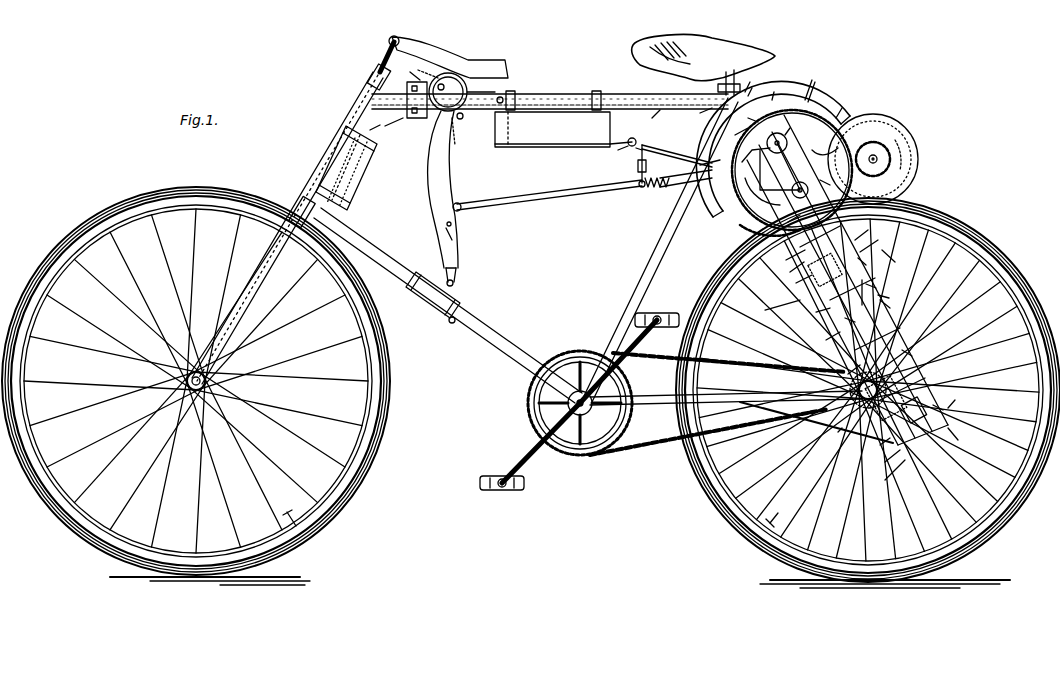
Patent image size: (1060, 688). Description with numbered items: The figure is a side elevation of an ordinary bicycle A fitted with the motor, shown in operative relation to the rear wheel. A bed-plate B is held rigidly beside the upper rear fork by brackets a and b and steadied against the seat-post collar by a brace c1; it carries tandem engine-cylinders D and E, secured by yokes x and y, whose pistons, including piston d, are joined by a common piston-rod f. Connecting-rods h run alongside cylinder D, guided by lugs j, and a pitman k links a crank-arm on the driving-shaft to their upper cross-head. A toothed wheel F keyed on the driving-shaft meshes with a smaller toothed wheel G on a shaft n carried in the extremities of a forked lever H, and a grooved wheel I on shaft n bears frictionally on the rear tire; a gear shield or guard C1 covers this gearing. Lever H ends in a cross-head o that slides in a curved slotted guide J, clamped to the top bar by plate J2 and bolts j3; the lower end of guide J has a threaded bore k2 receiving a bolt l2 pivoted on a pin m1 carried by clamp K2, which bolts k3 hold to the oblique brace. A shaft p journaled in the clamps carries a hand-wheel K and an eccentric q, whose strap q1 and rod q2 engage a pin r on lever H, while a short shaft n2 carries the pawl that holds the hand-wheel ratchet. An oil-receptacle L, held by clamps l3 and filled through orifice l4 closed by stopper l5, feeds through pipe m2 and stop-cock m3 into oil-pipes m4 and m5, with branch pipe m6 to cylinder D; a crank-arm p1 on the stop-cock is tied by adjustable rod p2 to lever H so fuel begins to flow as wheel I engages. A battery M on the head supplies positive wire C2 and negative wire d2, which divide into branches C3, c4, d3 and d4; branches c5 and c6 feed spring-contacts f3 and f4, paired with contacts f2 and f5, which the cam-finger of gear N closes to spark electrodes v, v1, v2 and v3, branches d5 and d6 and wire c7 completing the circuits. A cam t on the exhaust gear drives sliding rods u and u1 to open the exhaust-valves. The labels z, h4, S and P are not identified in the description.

The bicycle A is at (506, 341).
The bed-plate B is at (868, 390).
The main positive wire C2 is at (372, 108).
The hand-wheel K is at (412, 76).
The shaft n is at (423, 66).
The electric battery M is at (350, 180).
The main negative wire d2 is at (392, 126).
The yoke x is at (370, 130).
The longitudinally-concaved clamp plate J2 is at (416, 109).
The eccentric q is at (448, 92).
The short horizontal shaft p is at (443, 80).
The eccentric-strap q1 is at (481, 84).
The stopper l5 is at (497, 89).
The clamps l3 is at (555, 88).
The curved slotted guide J is at (432, 170).
The bolts j3 is at (467, 121).
The rod q2 is at (463, 133).
The oil-receptacle L is at (552, 129).
The orifice l4 is at (508, 129).
The pin r is at (547, 195).
The cross-head o is at (455, 221).
The internally threaded bore k2 is at (455, 237).
The threaded bolt l2 is at (456, 267).
The pin m1 is at (462, 279).
The clamp K2 is at (433, 296).
The bolts k3 is at (452, 325).
The adjustable rod p2 is at (650, 166).
The oil-pipe m4 is at (677, 147).
The stop-cock m3 is at (623, 134).
The short pipe m2 is at (614, 152).
The crank-arm p1 is at (633, 153).
The branch negative wire d3 is at (698, 118).
The branch positive wire C3 is at (752, 82).
The bracket or brace c1 is at (756, 84).
The branch wire c6 is at (812, 153).
The gear shield or guard C1 is at (773, 142).
The spring-contact f4 is at (816, 84).
The toothed wheel F is at (843, 105).
The smaller toothed wheel G is at (873, 159).
The grooved wheel I is at (900, 140).
The gear N is at (792, 170).
The spring-contact f5 is at (825, 146).
The spring-contact f3 is at (736, 136).
The branch wire c5 is at (748, 117).
The branch positive wire c4 is at (793, 123).
The spring-contact f2 is at (751, 158).
The common piston-rod f is at (782, 170).
The cam t is at (762, 191).
The pitman k is at (782, 179).
The longitudinally-sliding rod u is at (832, 187).
The longitudinally-sliding rod u1 is at (787, 223).
The branch negative wire d5 is at (763, 235).
The forked lever H is at (705, 185).
The engine-cylinder D is at (847, 280).
The engine-cylinder E is at (913, 410).
The wire c7 is at (928, 351).
The arm or bracket a is at (817, 315).
The short branch pipe m6 is at (789, 271).
The negative electrode v1 is at (798, 283).
The piston d is at (868, 266).
The spring z is at (875, 290).
The connecting-rod h is at (888, 300).
The branch negative wire d6 is at (827, 397).
The lug j is at (849, 380).
The guide h4 is at (857, 323).
The branch negative wire d4 is at (827, 341).
The yoke y is at (927, 385).
The positive electrode v2 is at (958, 396).
The arm or bracket b is at (836, 436).
The negative electrode v3 is at (886, 460).
The positive electrode v is at (872, 233).
The short shaft n2 is at (868, 176).
The saddle S is at (703, 64).
The pedal crank P is at (662, 401).
The oil-pipe m5 is at (735, 173).